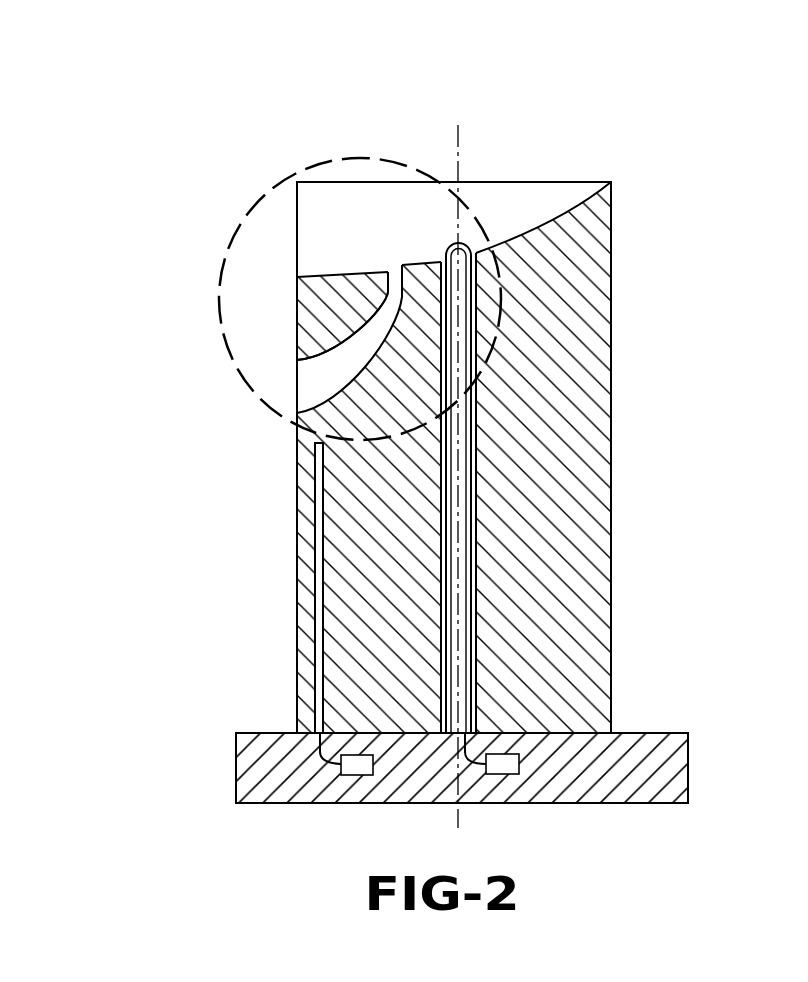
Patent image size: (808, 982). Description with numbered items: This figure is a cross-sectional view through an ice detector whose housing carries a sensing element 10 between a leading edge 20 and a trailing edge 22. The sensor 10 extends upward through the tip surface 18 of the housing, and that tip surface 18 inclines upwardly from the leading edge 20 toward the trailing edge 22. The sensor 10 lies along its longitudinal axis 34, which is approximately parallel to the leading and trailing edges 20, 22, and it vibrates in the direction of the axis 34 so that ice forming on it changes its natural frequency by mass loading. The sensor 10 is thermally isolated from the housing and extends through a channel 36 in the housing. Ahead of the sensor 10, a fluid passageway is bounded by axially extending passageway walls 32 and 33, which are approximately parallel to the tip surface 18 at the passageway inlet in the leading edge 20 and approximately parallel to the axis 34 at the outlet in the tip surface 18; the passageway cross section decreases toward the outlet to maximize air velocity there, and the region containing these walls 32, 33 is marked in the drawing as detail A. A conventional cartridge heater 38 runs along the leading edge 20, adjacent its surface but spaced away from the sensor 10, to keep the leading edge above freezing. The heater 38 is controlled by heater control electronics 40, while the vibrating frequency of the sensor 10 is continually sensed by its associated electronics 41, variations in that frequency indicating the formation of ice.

The sensing element 10 is at (465, 598).
The tip surface 18 is at (553, 222).
The leading edge 20 is at (297, 550).
The trailing edge 22 is at (612, 538).
The passageway wall 32 is at (316, 403).
The passageway wall 33 is at (320, 355).
The axis of the sensor element 34 is at (458, 148).
The channel 36 is at (471, 473).
The cartridge heater 38 is at (320, 600).
The electronics 40 is at (358, 767).
The electronics 41 is at (502, 768).
The detail area A is at (248, 212).